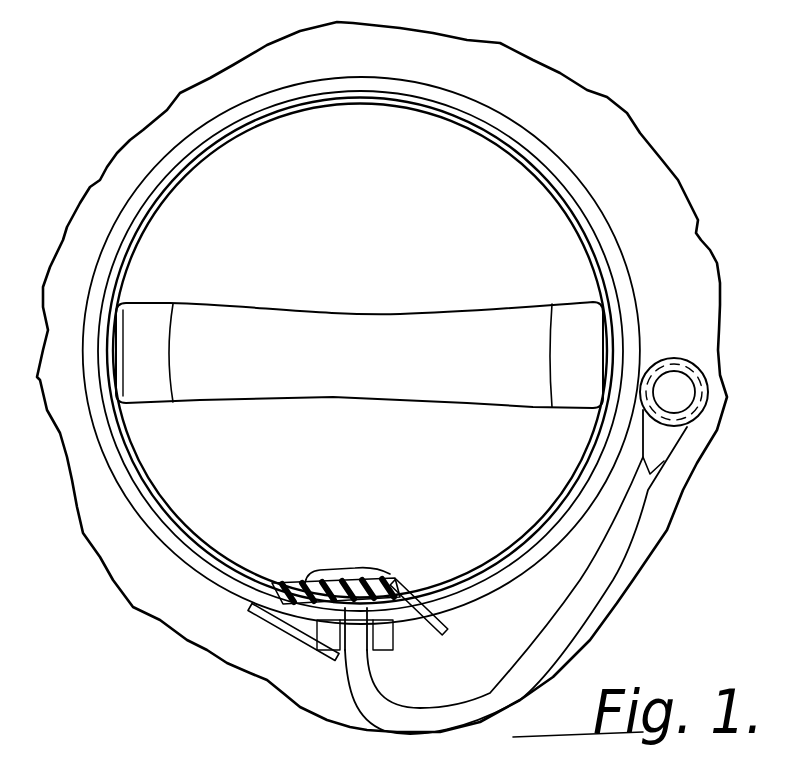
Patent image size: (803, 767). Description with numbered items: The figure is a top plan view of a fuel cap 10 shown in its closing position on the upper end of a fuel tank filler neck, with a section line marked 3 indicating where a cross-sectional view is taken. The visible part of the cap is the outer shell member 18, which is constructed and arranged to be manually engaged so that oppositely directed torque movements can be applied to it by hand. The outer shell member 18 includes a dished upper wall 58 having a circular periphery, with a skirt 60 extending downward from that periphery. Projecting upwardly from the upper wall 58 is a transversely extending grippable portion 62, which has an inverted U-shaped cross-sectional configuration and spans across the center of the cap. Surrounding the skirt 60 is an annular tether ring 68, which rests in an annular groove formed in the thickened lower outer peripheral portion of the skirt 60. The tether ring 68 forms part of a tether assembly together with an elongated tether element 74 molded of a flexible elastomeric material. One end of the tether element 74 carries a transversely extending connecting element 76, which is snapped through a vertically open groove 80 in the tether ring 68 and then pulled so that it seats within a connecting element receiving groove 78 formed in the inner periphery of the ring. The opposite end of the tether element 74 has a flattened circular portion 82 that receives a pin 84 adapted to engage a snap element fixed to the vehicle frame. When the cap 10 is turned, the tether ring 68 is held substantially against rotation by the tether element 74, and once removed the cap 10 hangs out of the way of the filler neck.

The fuel cap 10 is at (395, 378).
The outer shell member 18 is at (370, 350).
The dished upper wall 58 is at (240, 535).
The skirt 60 is at (132, 492).
The grippable portion 62 is at (362, 387).
The tether ring 68 is at (417, 615).
The elongated tether element 74 is at (563, 623).
The transversely extending connecting element 76 is at (400, 647).
The connecting element receiving groove 78 is at (278, 636).
The vertically open groove 80 is at (350, 657).
The flattened circular portion 82 is at (667, 440).
The pin 84 is at (682, 390).
The section line 3- 3 is at (305, 62).